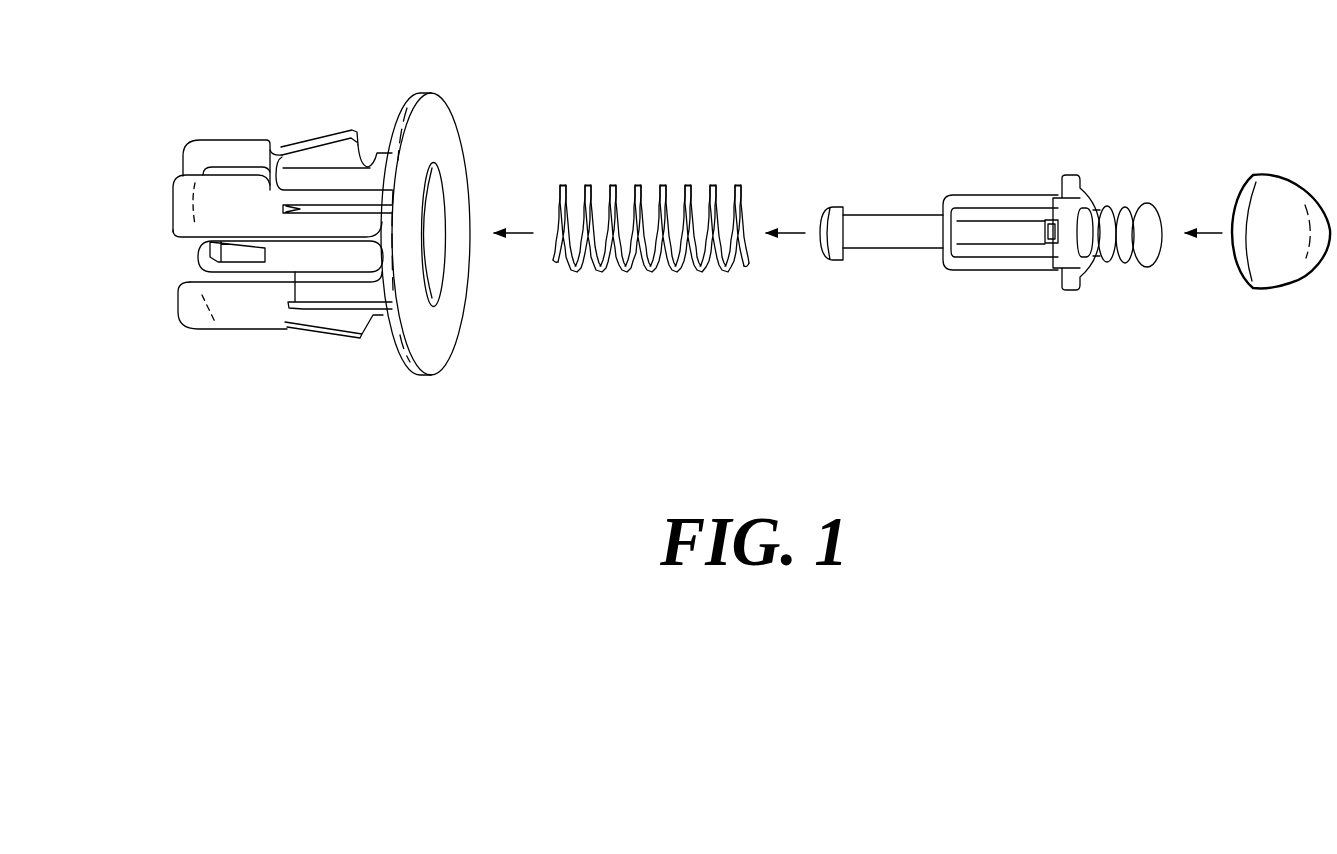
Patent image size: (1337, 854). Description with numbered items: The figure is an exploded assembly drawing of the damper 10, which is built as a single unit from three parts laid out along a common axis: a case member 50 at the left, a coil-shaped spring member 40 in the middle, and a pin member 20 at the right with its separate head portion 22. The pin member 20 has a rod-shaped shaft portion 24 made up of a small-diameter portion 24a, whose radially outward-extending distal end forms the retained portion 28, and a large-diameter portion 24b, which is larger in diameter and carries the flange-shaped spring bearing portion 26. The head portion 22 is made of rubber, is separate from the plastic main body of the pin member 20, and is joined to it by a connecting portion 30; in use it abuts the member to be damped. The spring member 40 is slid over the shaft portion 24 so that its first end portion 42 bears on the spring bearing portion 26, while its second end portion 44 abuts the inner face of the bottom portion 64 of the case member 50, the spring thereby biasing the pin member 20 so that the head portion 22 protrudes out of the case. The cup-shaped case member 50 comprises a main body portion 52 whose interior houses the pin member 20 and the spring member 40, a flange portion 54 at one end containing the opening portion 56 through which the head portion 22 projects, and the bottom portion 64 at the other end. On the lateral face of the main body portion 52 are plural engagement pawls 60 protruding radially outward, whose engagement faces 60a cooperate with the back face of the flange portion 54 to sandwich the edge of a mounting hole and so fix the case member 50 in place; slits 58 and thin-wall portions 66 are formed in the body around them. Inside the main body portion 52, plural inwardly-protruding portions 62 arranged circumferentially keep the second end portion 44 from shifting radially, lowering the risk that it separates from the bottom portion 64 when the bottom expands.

The damper 10 is at (817, 416).
The pin member 20 is at (991, 244).
The head portion 22 is at (1273, 284).
The shaft portion 24 is at (950, 194).
The small-diameter portion 24a is at (918, 230).
The large-diameter portion 24b is at (1003, 200).
The spring bearing portion 26 is at (1057, 190).
The retained portion 28 is at (833, 261).
The connecting portion 30 is at (1132, 205).
The spring member 40 is at (670, 236).
The first end portion 42 is at (742, 192).
The second end portion 44 is at (557, 196).
The case member 50 is at (253, 337).
The main body portion 52 is at (262, 190).
The flange portion 54 is at (440, 108).
The opening portion 56 is at (440, 282).
The slits 58 is at (296, 274).
The engagement pawls 60 is at (332, 137).
The engagement faces 60a is at (367, 137).
The inwardly-protruding portions 62 is at (186, 246).
The bottom portion 64 is at (173, 214).
The thin-wall portions 66 is at (300, 172).